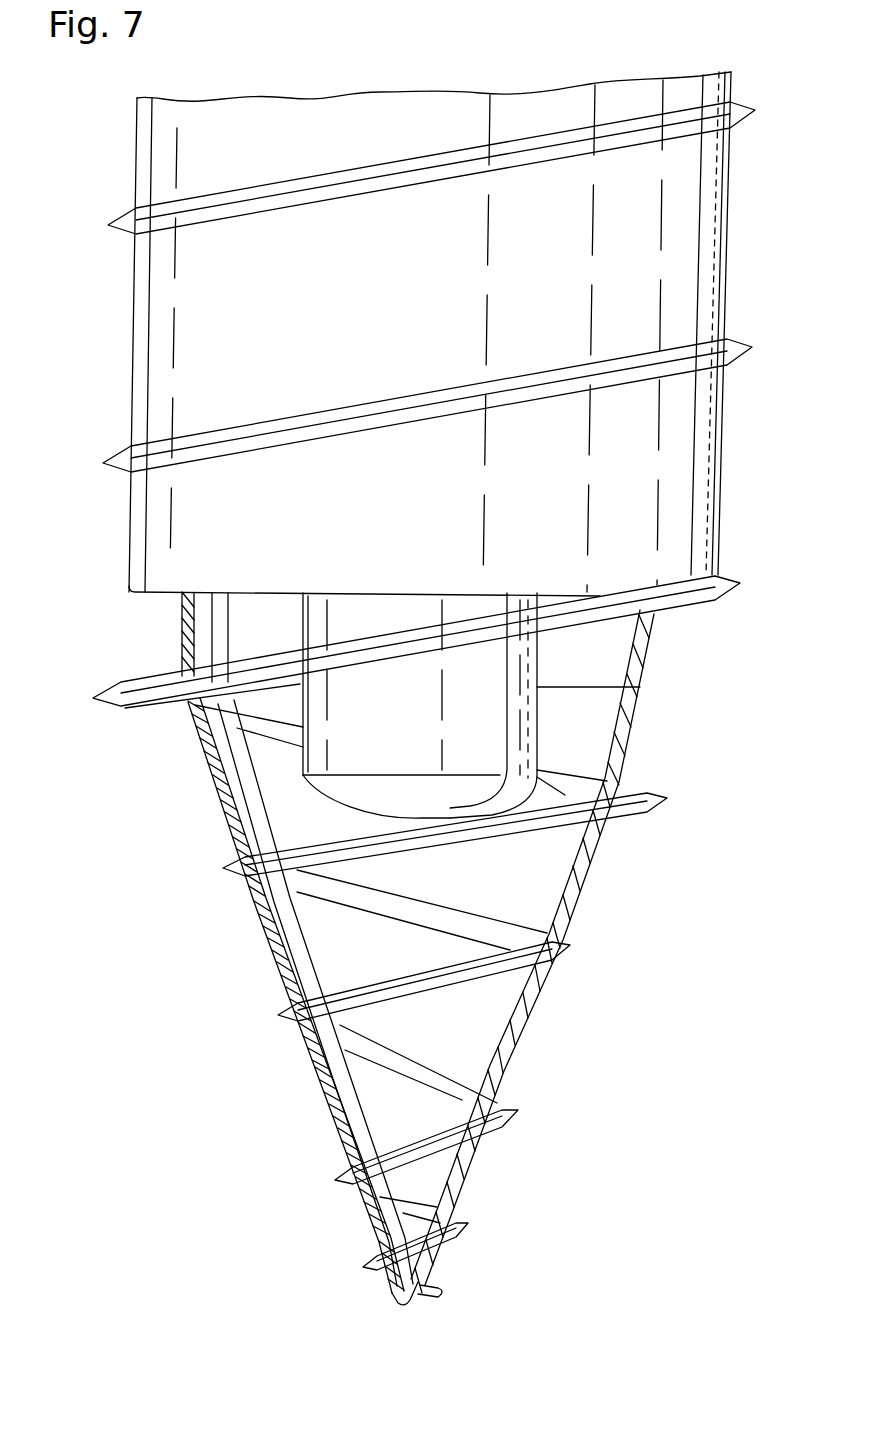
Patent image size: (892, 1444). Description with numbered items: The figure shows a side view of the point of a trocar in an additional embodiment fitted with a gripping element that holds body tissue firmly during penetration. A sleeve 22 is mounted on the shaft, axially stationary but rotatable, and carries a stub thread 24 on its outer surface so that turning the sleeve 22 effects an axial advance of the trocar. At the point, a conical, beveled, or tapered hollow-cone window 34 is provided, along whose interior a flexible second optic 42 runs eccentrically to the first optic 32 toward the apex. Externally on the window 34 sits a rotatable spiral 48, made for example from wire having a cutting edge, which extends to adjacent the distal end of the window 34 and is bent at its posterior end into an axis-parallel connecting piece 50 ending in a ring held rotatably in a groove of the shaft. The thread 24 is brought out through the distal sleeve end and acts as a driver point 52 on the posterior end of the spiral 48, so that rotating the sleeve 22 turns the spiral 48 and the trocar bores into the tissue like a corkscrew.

The sleeve 22 is at (682, 488).
The stub thread 24 is at (732, 335).
The first optic 32 is at (525, 745).
The hollow-cone window 34 is at (513, 1042).
The second optic 42 is at (300, 947).
The spiral 48 is at (567, 968).
The connecting piece 50 is at (503, 705).
The driver point 52 is at (500, 833).